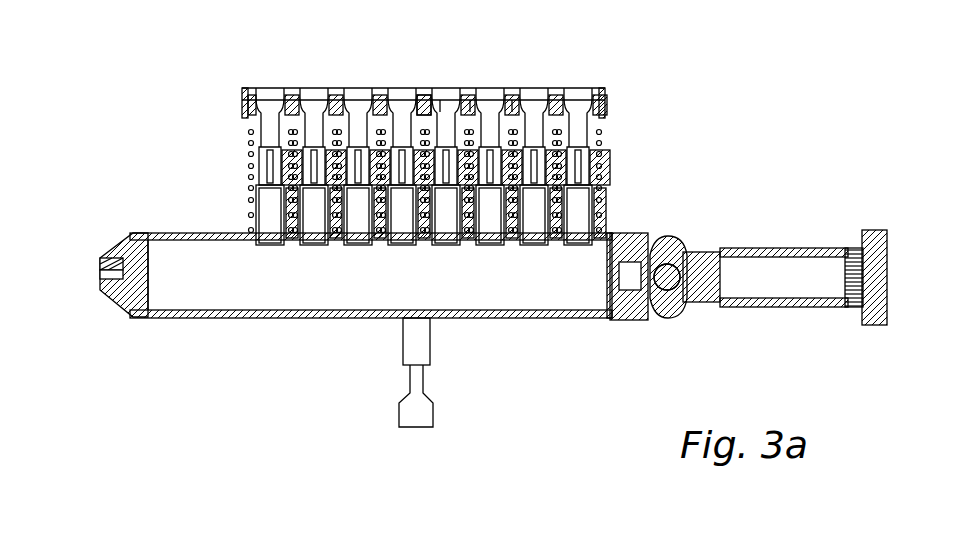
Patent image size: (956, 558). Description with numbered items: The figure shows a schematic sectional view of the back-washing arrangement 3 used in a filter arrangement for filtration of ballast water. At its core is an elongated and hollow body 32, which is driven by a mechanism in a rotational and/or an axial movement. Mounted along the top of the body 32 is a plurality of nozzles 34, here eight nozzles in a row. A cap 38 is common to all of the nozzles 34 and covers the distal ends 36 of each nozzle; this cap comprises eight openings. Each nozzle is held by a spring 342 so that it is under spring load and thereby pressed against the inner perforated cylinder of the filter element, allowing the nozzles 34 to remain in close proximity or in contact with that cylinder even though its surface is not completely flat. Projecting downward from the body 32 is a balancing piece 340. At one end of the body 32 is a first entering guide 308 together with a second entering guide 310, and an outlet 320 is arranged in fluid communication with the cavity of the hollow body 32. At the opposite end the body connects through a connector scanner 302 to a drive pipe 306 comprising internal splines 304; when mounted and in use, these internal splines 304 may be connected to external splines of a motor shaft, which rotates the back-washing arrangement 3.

The back-washing arrangement 3 is at (178, 98).
The elongated and hollow body 32 is at (526, 286).
The nozzles 34 is at (533, 220).
The distal ends 36 is at (315, 88).
The cap 38 is at (431, 100).
The spring 342 is at (512, 98).
The connector scanner 302 is at (640, 316).
The internal splines 304 is at (860, 280).
The drive pipe 306 is at (770, 282).
The first entering guide 308 is at (90, 278).
The second entering guide 310 is at (120, 260).
The outlet 320 is at (100, 275).
The balancing piece 340 is at (425, 413).